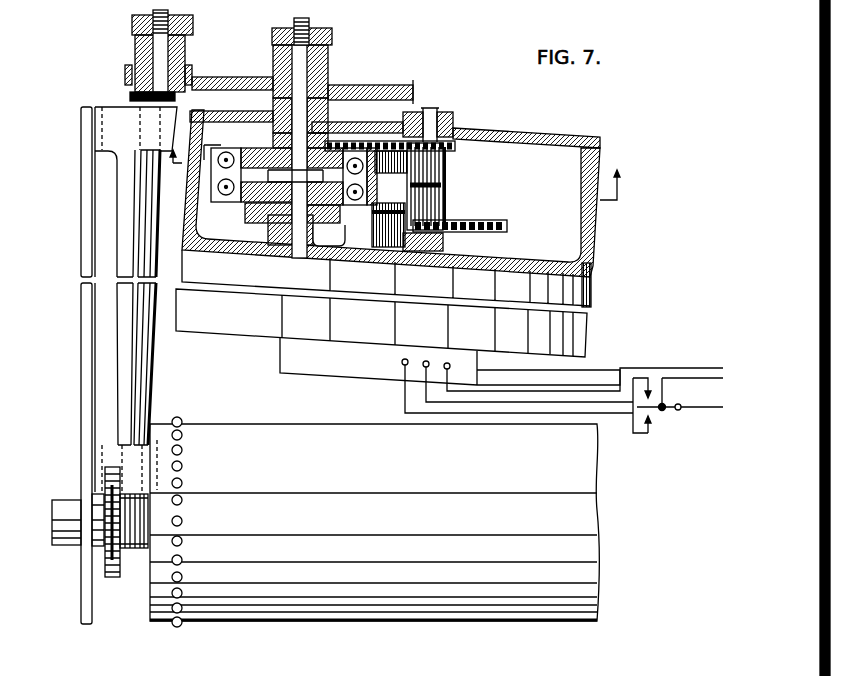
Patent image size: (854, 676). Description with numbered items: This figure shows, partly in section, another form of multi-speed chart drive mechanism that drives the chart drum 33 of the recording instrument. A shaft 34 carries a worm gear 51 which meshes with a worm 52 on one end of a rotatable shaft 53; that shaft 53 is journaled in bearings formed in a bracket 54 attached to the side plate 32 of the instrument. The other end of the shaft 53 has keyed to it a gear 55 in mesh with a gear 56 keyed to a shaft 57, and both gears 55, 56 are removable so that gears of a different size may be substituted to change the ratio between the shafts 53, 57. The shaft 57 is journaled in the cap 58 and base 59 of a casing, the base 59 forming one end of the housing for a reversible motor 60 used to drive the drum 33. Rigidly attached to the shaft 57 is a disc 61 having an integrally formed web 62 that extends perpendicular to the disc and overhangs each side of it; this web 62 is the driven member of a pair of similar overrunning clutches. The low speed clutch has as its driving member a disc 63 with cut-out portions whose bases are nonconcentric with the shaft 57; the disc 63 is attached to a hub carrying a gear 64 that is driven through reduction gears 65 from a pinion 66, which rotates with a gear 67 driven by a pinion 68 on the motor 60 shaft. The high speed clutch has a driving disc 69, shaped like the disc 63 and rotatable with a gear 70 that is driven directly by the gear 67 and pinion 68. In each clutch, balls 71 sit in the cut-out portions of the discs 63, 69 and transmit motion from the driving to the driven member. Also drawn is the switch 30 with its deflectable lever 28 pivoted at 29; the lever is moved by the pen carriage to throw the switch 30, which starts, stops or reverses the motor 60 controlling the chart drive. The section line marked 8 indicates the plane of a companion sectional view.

The section line 8 is at (393, 184).
The deflectable lever 28 is at (710, 406).
The pivot 29 is at (680, 410).
The switch 30 is at (655, 410).
The side plate 32 is at (87, 344).
The chart drum 33 is at (582, 479).
The shaft 34 is at (63, 507).
The worm gear 51 is at (109, 578).
The worm 52 is at (137, 553).
The rotatable shaft 53 is at (141, 373).
The bracket 54 is at (120, 127).
The gear 55 is at (143, 50).
The gear 56 is at (237, 80).
The shaft 57 is at (302, 72).
The cap 58 is at (518, 134).
The base 59 is at (594, 262).
The reversible motor 60 is at (542, 337).
The disc 61 is at (428, 181).
The web 62 is at (438, 198).
The disc 63 is at (262, 142).
The gear 64 is at (226, 135).
The reduction gears 65 is at (358, 140).
The pinion 66 is at (445, 163).
The gear 67 is at (498, 218).
The pinion 68 is at (444, 245).
The disc 69 is at (248, 181).
The gear 70 is at (254, 222).
The balls 71 is at (313, 252).